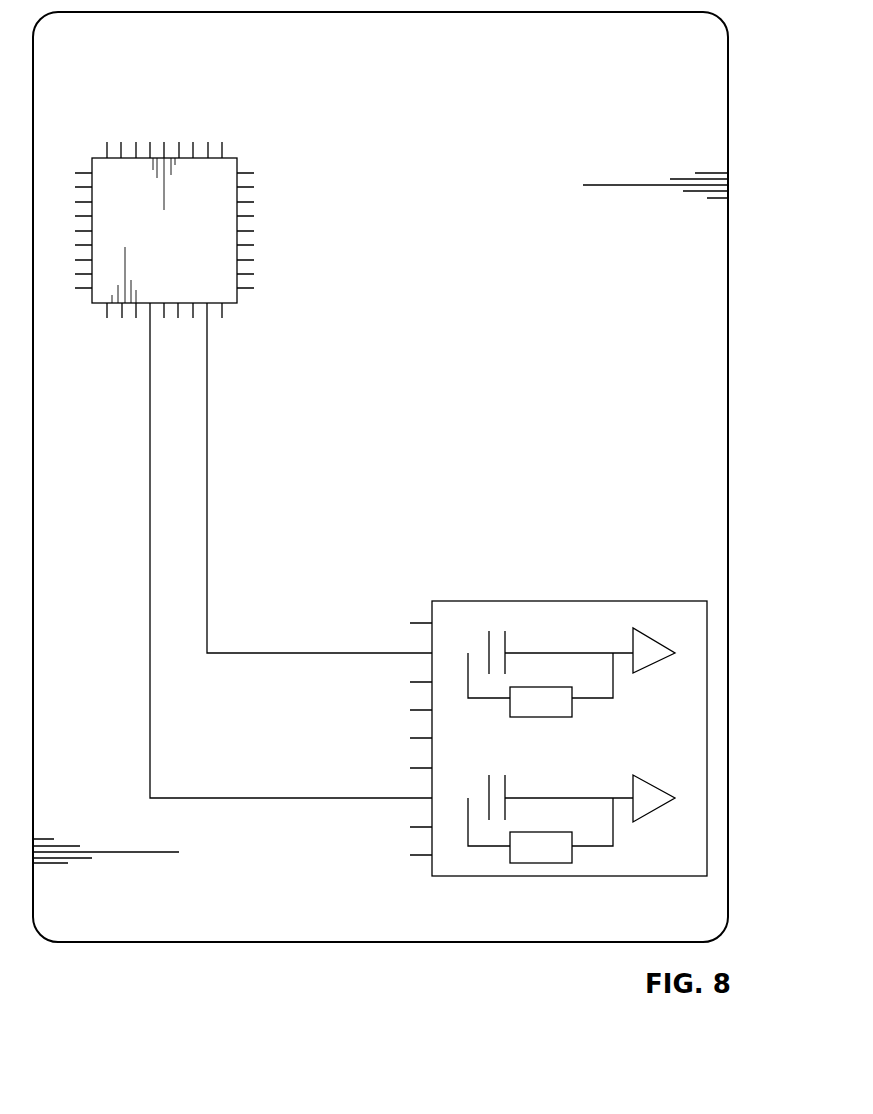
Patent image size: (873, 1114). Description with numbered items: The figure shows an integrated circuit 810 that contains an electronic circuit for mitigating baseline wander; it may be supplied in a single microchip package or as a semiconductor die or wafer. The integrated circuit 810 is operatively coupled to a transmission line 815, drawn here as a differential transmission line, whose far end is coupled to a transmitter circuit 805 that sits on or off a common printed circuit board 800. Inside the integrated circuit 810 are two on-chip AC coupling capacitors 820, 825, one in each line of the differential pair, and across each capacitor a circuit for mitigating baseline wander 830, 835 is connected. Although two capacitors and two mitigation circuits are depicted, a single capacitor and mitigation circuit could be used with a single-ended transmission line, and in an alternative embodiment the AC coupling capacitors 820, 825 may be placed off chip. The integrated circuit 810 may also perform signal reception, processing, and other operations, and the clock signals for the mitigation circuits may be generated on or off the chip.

The printed circuit board 800 is at (672, 65).
The transmitter circuit 805 is at (210, 122).
The integrated circuit 810 is at (512, 737).
The transmission line 815 is at (262, 770).
The AC coupling capacitor 820 is at (470, 768).
The AC coupling capacitor 825 is at (500, 618).
The circuit for mitigating baseline wander 830 is at (552, 885).
The circuit for mitigating baseline wander 835 is at (607, 752).